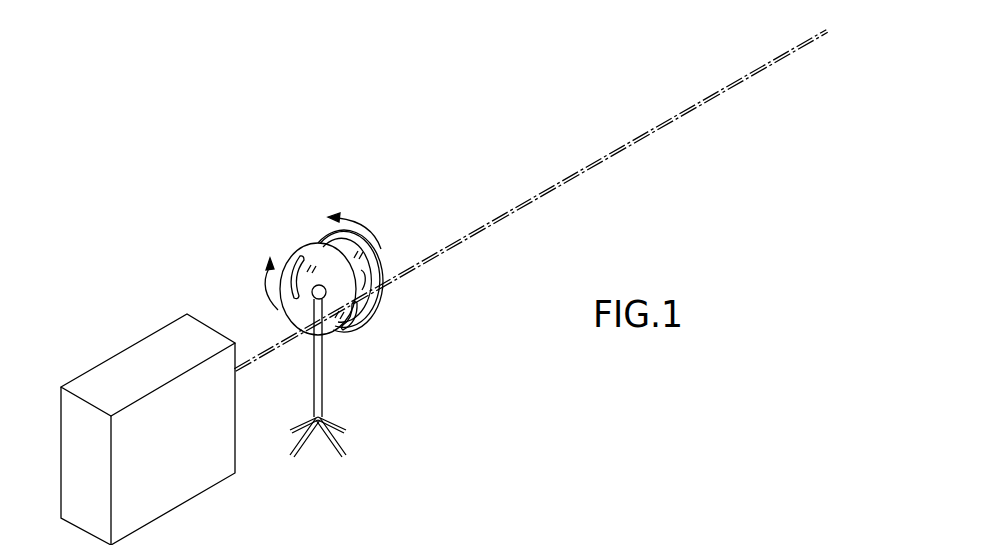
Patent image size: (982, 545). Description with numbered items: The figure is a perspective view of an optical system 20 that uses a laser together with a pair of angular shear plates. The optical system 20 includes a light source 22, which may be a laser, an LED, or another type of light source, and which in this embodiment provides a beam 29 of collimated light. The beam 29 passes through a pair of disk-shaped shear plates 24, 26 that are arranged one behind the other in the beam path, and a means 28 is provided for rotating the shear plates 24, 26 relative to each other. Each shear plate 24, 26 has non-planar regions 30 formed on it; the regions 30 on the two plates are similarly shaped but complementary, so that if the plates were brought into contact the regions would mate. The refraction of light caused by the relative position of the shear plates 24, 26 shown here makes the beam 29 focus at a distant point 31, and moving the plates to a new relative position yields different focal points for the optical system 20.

The optical system 20 is at (362, 326).
The light source 22 is at (212, 470).
The shear plate 24 is at (346, 326).
The shear plate 26 is at (378, 295).
The means for rotating the shear plates 28 is at (304, 303).
The beam 29 is at (258, 360).
The non-planar regions 30 is at (302, 268).
The distant point 31 is at (817, 23).